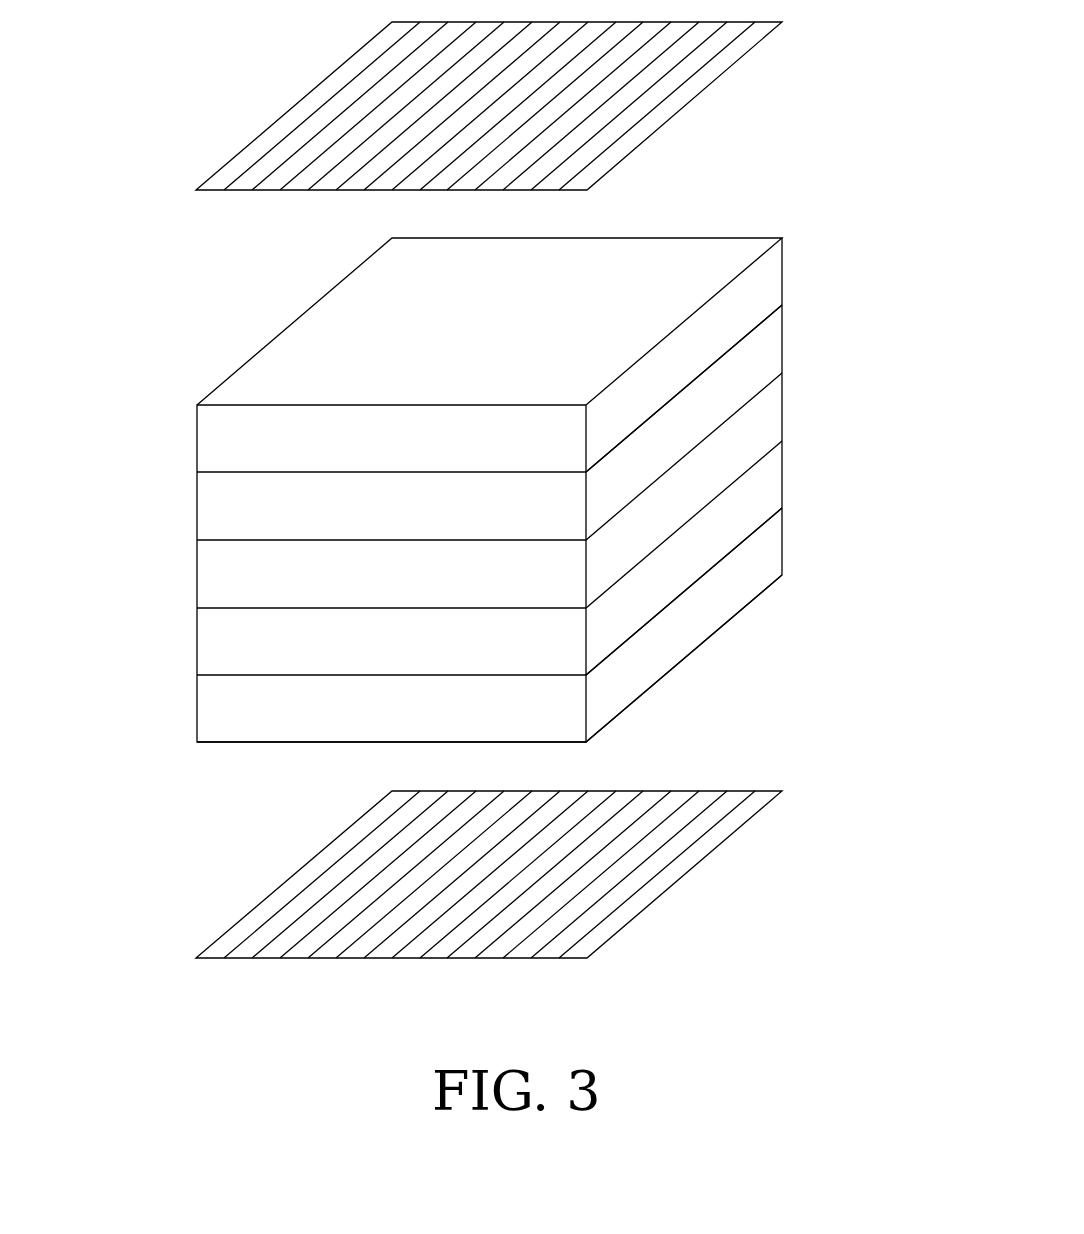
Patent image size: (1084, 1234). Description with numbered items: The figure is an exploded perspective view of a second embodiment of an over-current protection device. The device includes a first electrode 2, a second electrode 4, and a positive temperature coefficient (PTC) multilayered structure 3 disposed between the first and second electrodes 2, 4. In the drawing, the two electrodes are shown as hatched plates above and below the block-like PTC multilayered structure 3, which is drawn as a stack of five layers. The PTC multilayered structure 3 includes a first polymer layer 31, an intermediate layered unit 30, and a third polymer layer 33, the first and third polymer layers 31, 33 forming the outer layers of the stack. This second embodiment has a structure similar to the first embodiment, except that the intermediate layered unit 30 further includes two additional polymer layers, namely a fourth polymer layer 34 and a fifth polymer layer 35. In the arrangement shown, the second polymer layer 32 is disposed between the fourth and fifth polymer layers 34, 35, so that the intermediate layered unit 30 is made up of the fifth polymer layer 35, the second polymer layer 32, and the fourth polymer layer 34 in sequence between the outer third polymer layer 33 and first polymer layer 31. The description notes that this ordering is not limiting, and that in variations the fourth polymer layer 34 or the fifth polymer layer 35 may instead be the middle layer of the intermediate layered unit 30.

The first electrode 2 is at (710, 853).
The second electrode 4 is at (708, 85).
The positive temperature coefficient (PTC) multilayered structure 3 is at (504, 490).
The intermediate layered unit 30 is at (875, 307).
The first polymer layer 31 is at (764, 562).
The second polymer layer 32 is at (764, 418).
The third polymer layer 33 is at (764, 283).
The fourth polymer layer 34 is at (764, 483).
The fifth polymer layer 35 is at (764, 350).